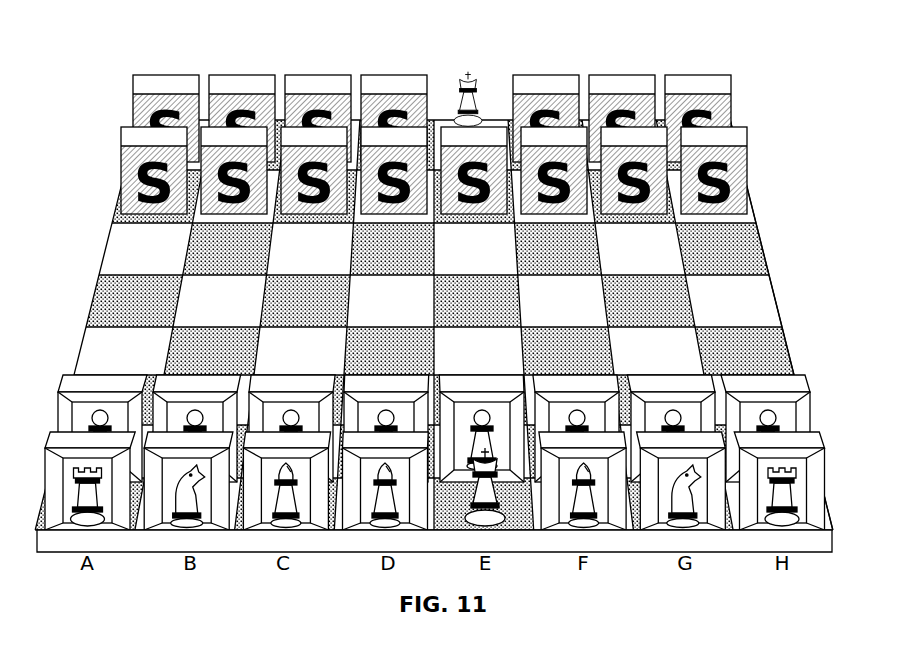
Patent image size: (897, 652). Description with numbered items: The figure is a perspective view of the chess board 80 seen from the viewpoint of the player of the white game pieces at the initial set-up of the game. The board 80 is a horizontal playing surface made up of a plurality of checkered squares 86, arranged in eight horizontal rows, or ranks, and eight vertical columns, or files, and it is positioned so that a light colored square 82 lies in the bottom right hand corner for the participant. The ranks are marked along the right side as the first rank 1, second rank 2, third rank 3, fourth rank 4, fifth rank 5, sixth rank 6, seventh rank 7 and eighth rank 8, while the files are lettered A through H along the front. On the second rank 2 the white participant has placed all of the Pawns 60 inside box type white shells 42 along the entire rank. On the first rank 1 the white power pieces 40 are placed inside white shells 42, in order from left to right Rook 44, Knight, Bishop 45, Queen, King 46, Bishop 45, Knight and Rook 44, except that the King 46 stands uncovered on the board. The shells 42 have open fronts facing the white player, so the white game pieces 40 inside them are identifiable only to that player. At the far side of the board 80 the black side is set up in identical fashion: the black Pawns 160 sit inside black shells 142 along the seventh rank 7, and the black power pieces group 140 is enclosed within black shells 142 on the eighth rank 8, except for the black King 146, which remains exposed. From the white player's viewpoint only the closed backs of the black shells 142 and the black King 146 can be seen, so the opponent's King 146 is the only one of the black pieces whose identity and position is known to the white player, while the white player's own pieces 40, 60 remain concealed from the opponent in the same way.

The chess board 80 is at (437, 325).
The checkered squares 86 is at (777, 352).
The black power pieces group 140 is at (393, 96).
The black game shell 142 is at (693, 84).
The black King 146 is at (470, 74).
The black Pawns 160 is at (101, 151).
The Pawns 60 is at (86, 421).
The white game pieces 40 is at (76, 494).
The white game shell 42 is at (58, 480).
The Rook 44 is at (88, 512).
The Bishop 45 is at (278, 517).
The white King 46 is at (490, 493).
The light colored square 82 is at (838, 524).
The first rank 1 is at (831, 504).
The second rank 2 is at (822, 451).
The third rank 3 is at (811, 400).
The fourth rank 4 is at (795, 351).
The fifth rank 5 is at (781, 301).
The sixth rank 6 is at (768, 249).
The seventh rank 7 is at (754, 196).
The eighth rank 8 is at (745, 145).